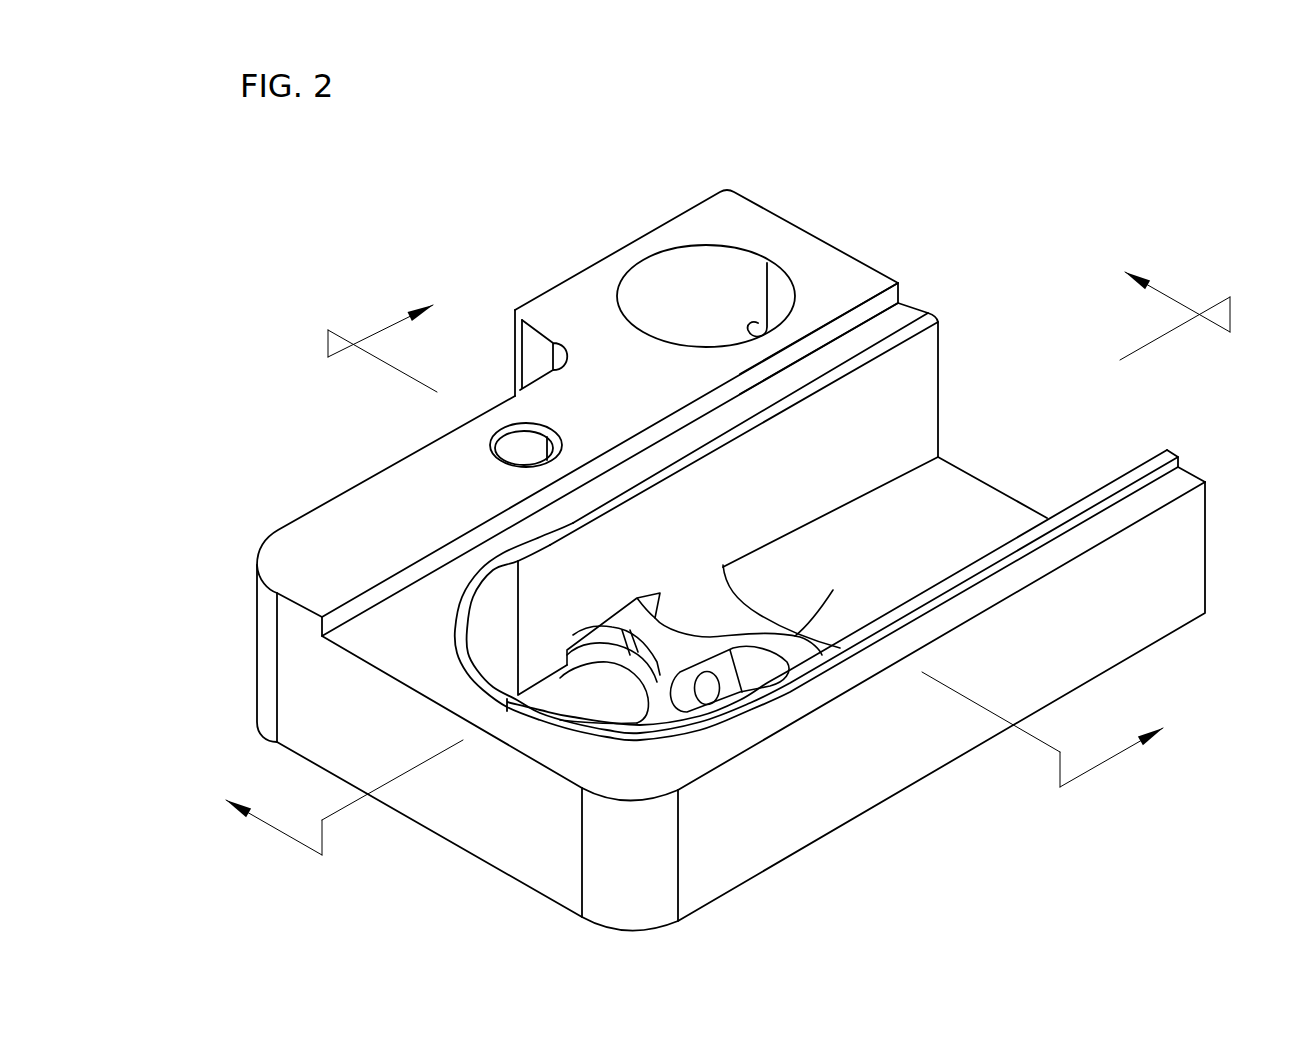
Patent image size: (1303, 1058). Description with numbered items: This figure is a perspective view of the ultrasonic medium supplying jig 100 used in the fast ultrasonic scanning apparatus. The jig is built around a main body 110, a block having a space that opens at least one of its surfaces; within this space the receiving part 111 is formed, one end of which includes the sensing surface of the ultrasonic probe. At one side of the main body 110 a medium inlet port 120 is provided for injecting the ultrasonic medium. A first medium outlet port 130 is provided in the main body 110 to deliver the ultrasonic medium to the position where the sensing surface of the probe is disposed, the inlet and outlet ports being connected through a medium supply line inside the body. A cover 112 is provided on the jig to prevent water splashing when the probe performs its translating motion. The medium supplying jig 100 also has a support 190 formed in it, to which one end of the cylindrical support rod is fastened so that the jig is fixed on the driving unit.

The medium supplying jig 100 is at (940, 190).
The main body 110 is at (878, 775).
The receiving part 111 is at (957, 499).
The cover 112 is at (855, 343).
The medium inlet port 120 is at (533, 440).
The first medium outlet port 130 is at (764, 666).
The support 190 is at (683, 280).